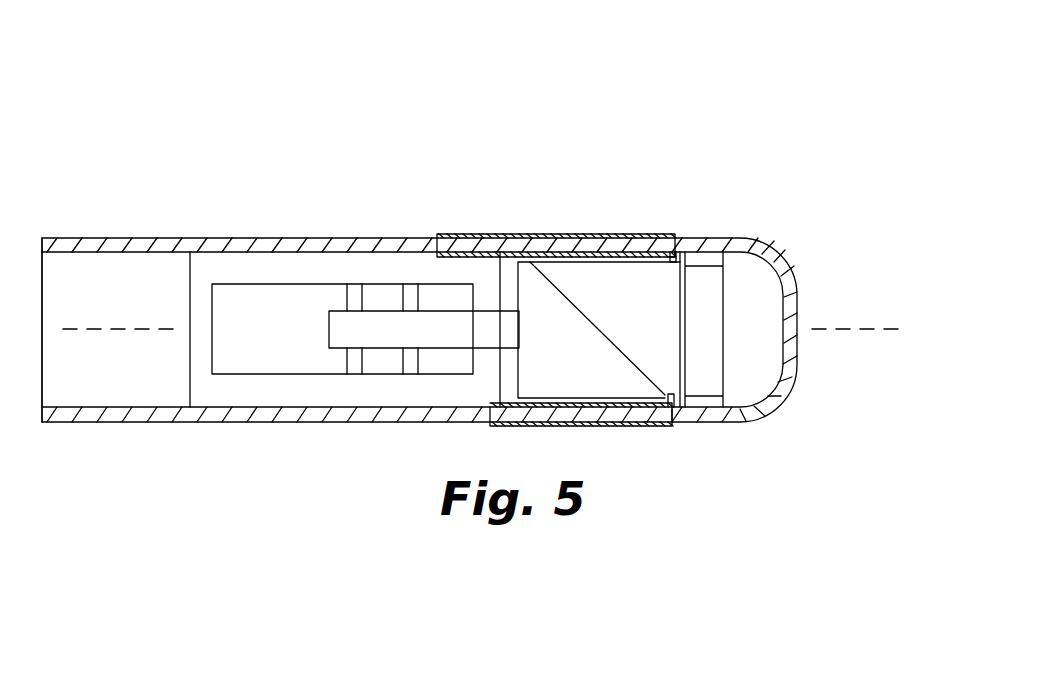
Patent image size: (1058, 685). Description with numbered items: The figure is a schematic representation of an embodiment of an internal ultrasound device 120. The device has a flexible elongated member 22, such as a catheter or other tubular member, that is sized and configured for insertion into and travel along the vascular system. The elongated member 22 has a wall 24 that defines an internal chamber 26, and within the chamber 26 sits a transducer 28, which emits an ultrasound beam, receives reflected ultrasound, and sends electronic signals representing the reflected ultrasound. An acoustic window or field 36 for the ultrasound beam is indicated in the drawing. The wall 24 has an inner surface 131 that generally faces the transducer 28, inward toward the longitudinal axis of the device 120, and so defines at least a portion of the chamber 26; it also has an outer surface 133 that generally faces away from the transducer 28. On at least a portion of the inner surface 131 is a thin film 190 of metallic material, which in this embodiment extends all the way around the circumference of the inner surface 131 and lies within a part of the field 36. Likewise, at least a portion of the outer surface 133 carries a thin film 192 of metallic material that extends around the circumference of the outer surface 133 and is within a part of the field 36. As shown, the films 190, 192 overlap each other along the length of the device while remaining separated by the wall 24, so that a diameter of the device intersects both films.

The internal ultrasound device 120 is at (448, 115).
The flexible elongated member 22 is at (262, 215).
The outer surface 133 is at (373, 237).
The wall 24 is at (478, 236).
The film of metallic material 192 is at (548, 236).
The acoustic window or field 36 is at (605, 242).
The internal chamber 26 is at (643, 278).
The film of metallic material 190 is at (620, 237).
The inner surface 131 is at (666, 255).
The transducer 28 is at (710, 295).